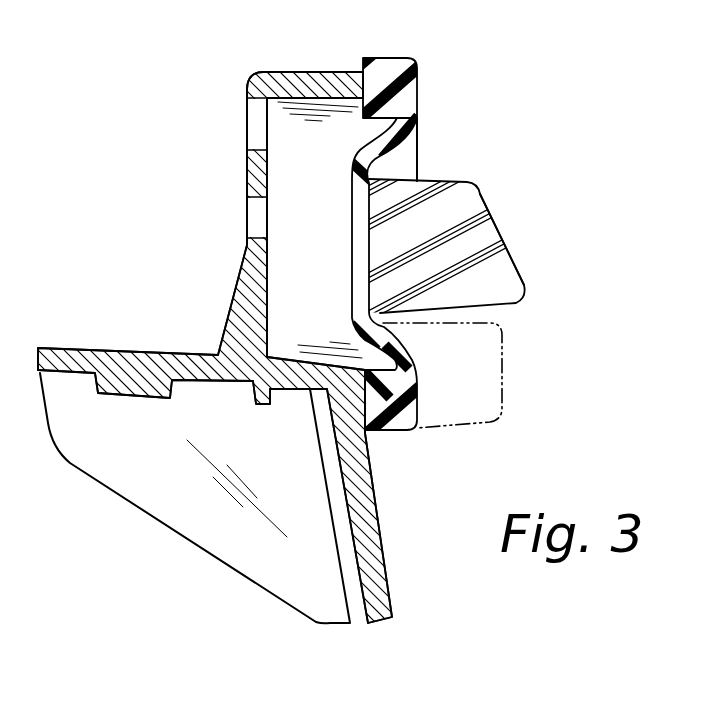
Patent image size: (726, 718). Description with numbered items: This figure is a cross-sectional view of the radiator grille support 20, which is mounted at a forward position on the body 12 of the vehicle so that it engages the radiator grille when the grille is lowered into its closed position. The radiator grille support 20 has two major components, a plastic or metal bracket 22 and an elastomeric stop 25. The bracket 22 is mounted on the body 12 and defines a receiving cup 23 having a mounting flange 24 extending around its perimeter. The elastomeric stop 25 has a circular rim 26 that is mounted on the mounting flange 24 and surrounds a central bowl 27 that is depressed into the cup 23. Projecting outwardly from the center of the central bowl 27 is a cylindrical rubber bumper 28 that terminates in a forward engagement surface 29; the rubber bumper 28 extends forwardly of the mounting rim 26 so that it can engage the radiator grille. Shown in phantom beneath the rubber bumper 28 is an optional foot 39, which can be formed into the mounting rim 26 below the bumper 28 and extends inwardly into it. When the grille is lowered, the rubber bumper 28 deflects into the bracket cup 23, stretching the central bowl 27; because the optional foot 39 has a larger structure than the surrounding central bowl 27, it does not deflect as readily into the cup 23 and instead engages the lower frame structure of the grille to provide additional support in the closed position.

The body 12 is at (167, 507).
The radiator grille support 20 is at (194, 133).
The bracket 22 is at (245, 322).
The receiving cup 23 is at (299, 202).
The mounting flange 24 is at (312, 80).
The elastomeric stop 25 is at (494, 248).
The circular rim 26 is at (402, 65).
The central bowl 27 is at (407, 160).
The cylindrical rubber bumper 28 is at (483, 300).
The forward engagement surface 29 is at (492, 238).
The optional foot 39 is at (480, 400).